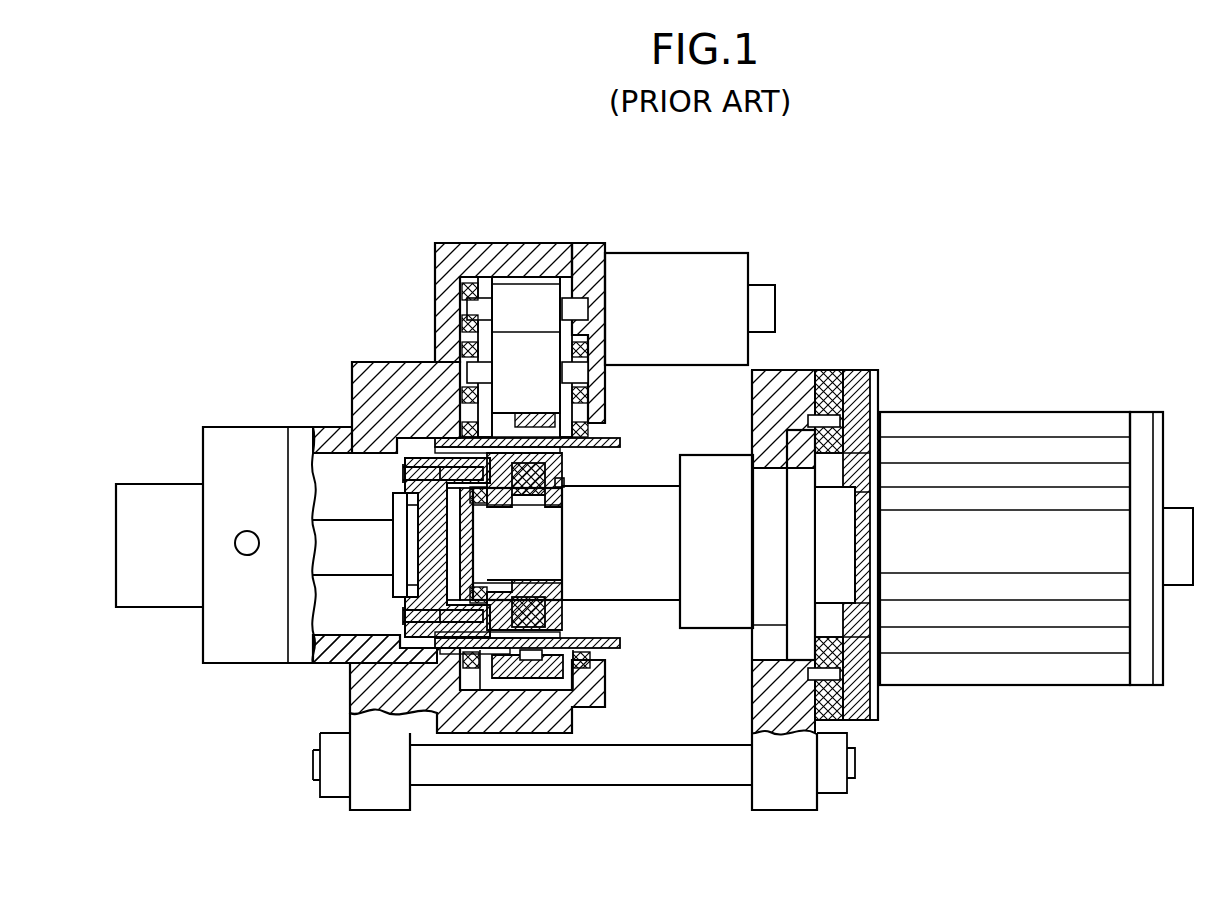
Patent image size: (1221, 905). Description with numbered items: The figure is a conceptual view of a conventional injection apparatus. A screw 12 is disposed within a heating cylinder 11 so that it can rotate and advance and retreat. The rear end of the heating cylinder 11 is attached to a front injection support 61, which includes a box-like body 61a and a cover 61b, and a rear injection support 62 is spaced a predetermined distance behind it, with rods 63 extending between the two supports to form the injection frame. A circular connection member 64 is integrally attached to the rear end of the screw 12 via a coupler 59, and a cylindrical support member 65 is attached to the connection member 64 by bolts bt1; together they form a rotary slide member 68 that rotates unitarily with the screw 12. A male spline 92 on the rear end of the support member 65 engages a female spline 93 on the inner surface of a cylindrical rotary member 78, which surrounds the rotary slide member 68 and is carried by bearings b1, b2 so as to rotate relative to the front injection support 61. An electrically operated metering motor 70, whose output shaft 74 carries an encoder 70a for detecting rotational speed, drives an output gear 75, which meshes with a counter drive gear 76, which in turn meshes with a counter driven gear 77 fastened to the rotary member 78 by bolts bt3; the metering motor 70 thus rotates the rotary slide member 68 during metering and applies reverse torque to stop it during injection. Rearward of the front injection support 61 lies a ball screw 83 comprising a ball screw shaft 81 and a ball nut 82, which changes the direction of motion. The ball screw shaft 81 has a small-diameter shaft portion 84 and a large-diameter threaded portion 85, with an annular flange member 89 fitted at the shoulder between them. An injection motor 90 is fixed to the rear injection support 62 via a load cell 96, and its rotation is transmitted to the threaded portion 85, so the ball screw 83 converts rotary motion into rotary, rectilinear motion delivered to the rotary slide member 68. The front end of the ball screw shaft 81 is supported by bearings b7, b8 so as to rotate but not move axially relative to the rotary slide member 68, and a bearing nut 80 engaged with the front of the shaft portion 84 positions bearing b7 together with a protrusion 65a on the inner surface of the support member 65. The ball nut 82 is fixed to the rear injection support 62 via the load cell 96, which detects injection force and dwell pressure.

The heating cylinder 11 is at (150, 483).
The screw 12 is at (330, 520).
The coupler 59 is at (400, 543).
The front injection support 61 is at (366, 357).
The box-like body 61a is at (435, 268).
The cover 61b is at (598, 306).
The rear injection support 62 is at (792, 370).
The rods 63 is at (717, 773).
The connection member 64 is at (430, 567).
The support member 65 is at (350, 667).
The protrusion 65a is at (495, 544).
The rotary slide member 68 is at (306, 612).
The metering motor 70 is at (682, 280).
The encoder 70a is at (762, 288).
The output shaft 74 is at (616, 252).
The output gear 75 is at (482, 296).
The counter drive gear 76 is at (532, 345).
The counter driven gear 77 is at (530, 672).
The rotary member 78 is at (455, 645).
The bearing nut 80 is at (317, 445).
The ball screw shaft 81 is at (686, 480).
The ball nut 82 is at (762, 537).
The ball screw 83 is at (744, 514).
The shaft portion 84 is at (502, 571).
The threaded portion 85 is at (665, 470).
The flange member 89 is at (562, 486).
The injection motor 90 is at (978, 412).
The male spline 92 is at (490, 660).
The female spline 93 is at (570, 618).
The load cell 96 is at (835, 725).
The bearing b1 is at (472, 655).
The bearing b2 is at (590, 705).
The bearing b7 is at (470, 492).
The bearing b8 is at (606, 418).
The bolts bt1 is at (403, 615).
The bolts bt3 is at (563, 617).